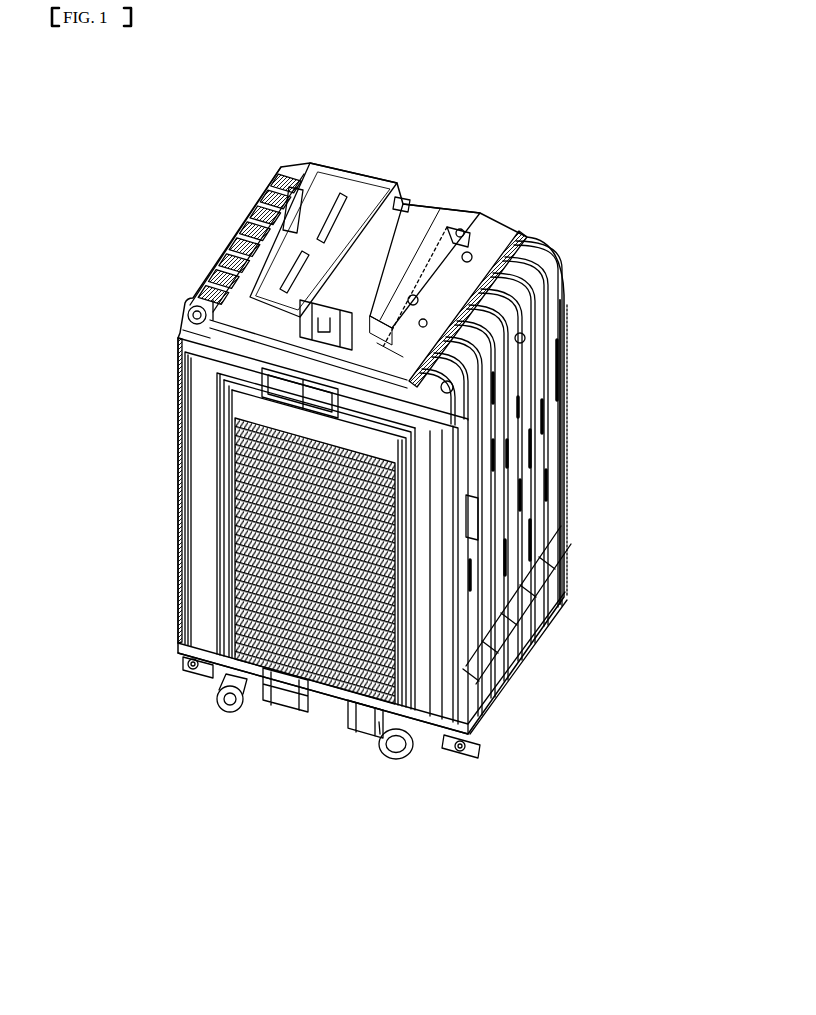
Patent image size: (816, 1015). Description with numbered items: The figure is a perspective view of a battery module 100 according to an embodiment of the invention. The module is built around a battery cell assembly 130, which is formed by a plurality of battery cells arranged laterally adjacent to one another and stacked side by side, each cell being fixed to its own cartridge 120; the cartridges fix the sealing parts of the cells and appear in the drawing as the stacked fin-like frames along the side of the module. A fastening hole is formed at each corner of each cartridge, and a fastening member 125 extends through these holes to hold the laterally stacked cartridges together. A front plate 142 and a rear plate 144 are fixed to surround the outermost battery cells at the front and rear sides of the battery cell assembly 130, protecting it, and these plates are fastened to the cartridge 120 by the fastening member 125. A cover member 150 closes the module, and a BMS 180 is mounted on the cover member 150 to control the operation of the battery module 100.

The battery module 100 is at (124, 163).
The cartridge 120 is at (512, 384).
The fastening member 125 is at (187, 308).
The battery cell assembly 130 is at (542, 450).
The front plate 142 is at (203, 433).
The rear plate 144 is at (562, 507).
The cover member 150 is at (226, 380).
The BMS 180 is at (403, 203).